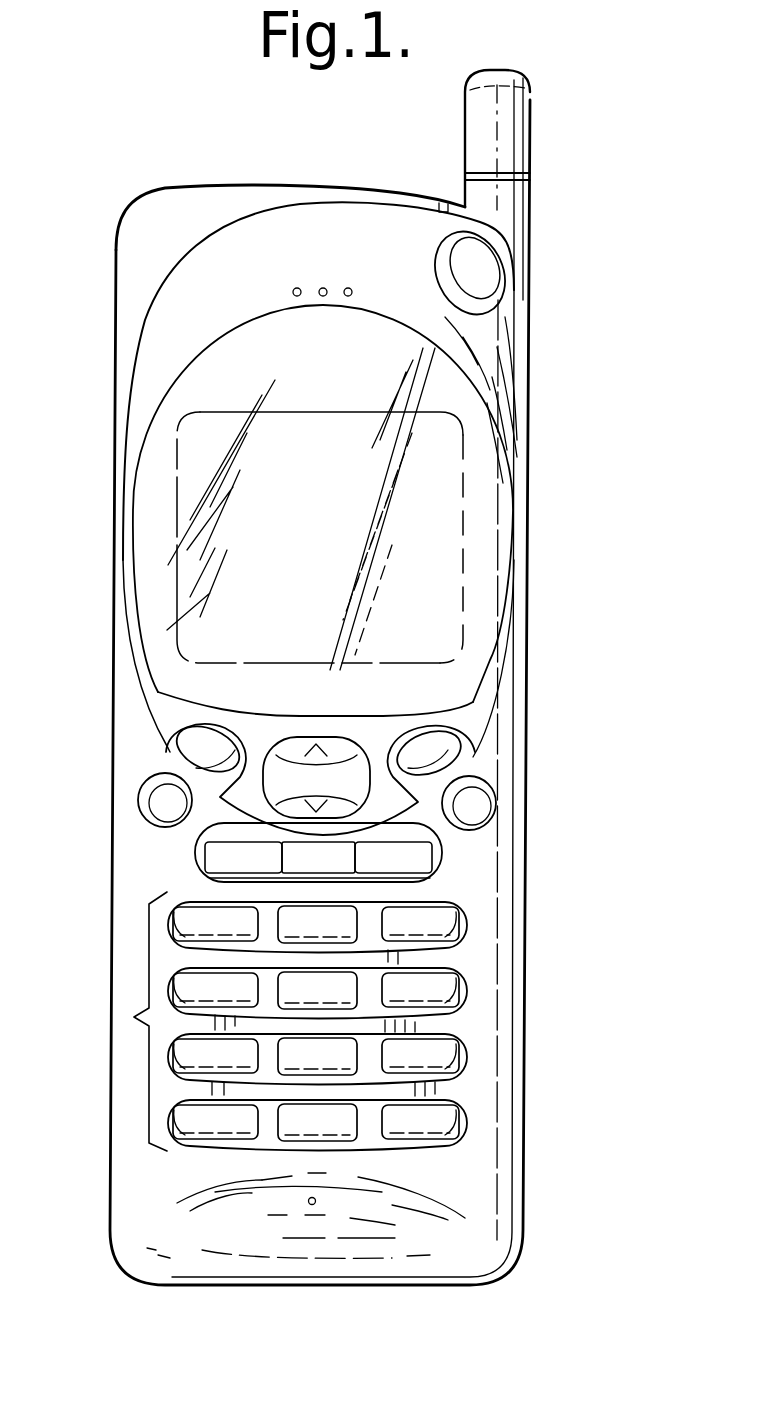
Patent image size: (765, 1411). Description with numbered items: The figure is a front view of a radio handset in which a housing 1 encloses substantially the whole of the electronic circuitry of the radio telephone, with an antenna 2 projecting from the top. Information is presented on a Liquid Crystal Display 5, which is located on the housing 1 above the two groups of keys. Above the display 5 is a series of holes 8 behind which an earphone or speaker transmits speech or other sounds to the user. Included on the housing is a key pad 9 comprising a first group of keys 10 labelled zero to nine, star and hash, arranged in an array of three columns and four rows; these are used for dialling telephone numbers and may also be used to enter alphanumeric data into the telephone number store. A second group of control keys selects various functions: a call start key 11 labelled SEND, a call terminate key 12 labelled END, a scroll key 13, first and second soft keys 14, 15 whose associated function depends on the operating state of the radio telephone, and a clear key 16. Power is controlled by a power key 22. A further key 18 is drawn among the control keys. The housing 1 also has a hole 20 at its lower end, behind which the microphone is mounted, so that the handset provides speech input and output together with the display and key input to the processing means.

The housing 1 is at (570, 472).
The antenna 2 is at (508, 135).
The Liquid Crystal Display 5 is at (430, 605).
The series of holes 8 is at (323, 288).
The key pad 9 is at (478, 1027).
The first group of keys 10 is at (134, 1017).
The call start key 11 is at (198, 862).
The call terminate key 12 is at (430, 860).
The scroll key 13 is at (363, 745).
The first soft key 14 is at (200, 750).
The second soft key 15 is at (440, 758).
The clear key 16 is at (162, 801).
The function key 18 is at (470, 810).
The hole 20 is at (308, 1201).
The power key 22 is at (480, 285).